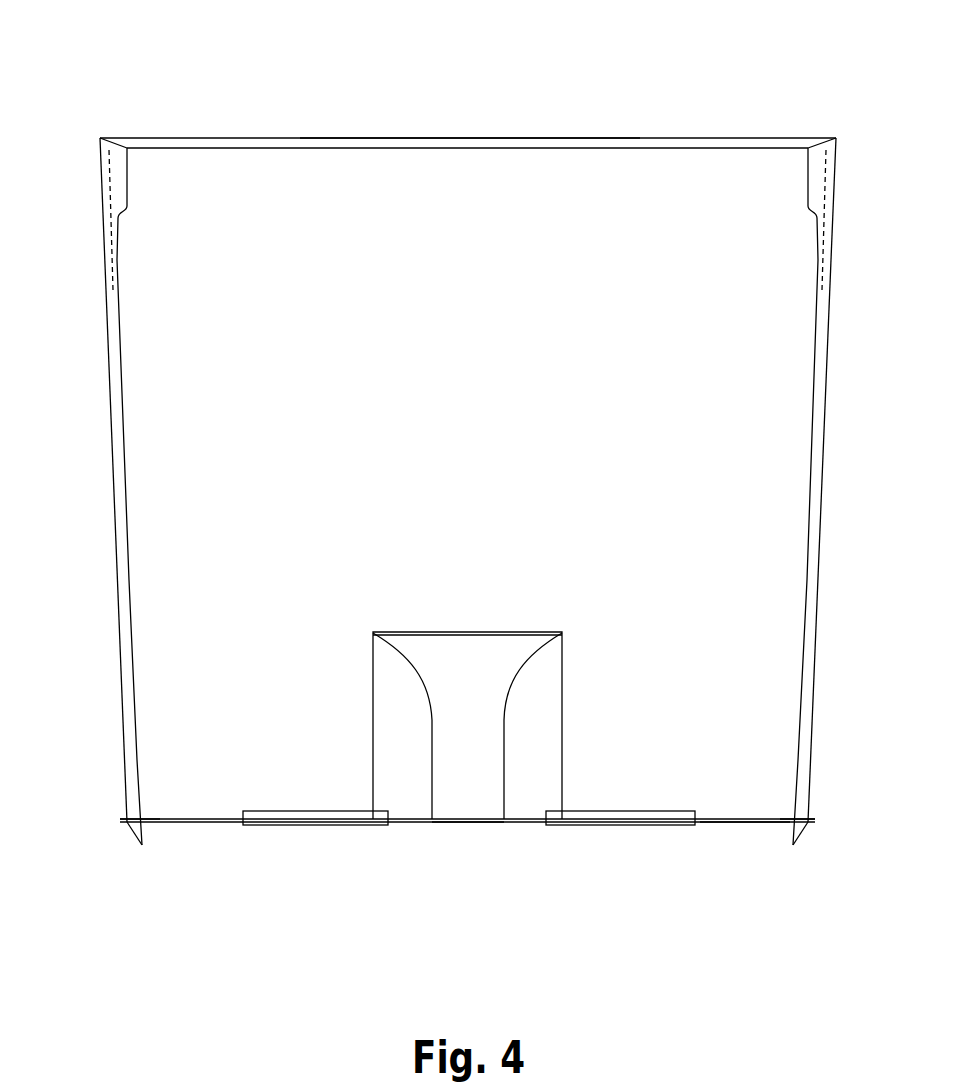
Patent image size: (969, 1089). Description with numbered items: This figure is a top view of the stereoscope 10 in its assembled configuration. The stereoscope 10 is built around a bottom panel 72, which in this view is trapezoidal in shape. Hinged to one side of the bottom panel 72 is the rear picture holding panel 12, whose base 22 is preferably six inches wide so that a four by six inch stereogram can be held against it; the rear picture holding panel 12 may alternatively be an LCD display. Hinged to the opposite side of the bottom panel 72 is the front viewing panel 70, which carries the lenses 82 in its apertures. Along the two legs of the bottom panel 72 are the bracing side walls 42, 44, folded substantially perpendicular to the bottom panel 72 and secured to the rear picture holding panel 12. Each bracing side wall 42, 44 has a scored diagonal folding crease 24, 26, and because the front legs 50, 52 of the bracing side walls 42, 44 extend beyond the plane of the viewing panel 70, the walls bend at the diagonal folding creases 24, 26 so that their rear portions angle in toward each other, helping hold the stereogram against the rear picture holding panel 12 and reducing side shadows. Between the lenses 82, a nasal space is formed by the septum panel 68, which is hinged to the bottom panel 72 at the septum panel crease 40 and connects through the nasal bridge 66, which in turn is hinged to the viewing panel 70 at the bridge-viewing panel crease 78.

The stereoscope 10 is at (769, 91).
The rear picture holding panel 12 is at (318, 138).
The base 22 is at (618, 147).
The diagonal folding crease 24 is at (104, 245).
The diagonal folding crease 26 is at (830, 245).
The septum panel crease 40 is at (418, 632).
The bracing side wall 42 is at (112, 476).
The bracing side wall 44 is at (822, 476).
The front leg 50 is at (133, 826).
The front leg 52 is at (800, 835).
The nasal bridge 66 is at (467, 760).
The septum panel 68 is at (468, 632).
The front viewing panel 70 is at (718, 822).
The bottom panel 72 is at (232, 706).
The bridge-viewing panel crease 78 is at (463, 822).
The lenses 82 is at (300, 826).